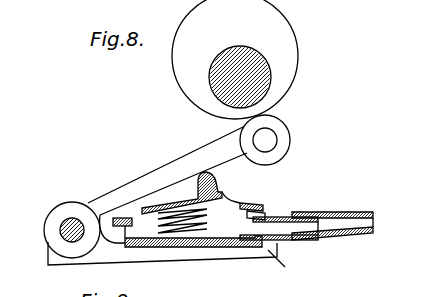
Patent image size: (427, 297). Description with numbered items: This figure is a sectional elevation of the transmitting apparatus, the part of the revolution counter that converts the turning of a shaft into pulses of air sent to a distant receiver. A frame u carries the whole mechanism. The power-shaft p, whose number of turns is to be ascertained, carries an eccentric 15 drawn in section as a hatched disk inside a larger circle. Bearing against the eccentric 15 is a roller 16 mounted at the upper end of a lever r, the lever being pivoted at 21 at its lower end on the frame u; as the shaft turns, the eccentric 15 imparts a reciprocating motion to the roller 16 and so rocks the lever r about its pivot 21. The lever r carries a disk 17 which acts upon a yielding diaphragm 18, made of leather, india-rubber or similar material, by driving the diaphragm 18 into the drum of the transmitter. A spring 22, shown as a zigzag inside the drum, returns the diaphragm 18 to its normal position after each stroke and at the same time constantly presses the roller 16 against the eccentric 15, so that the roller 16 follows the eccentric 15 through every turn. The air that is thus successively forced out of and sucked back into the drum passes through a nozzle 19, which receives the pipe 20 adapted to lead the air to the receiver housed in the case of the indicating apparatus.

The eccentric 15 is at (291, 30).
The power-shaft p is at (225, 57).
The roller 16 is at (282, 133).
The lever r is at (179, 164).
The pivot 21 is at (63, 225).
The frame u is at (172, 244).
The disk 17 is at (211, 197).
The spring 22 is at (206, 216).
The yielding diaphragm 18 is at (233, 201).
The nozzle 19 is at (273, 214).
The pipe 20 is at (335, 211).